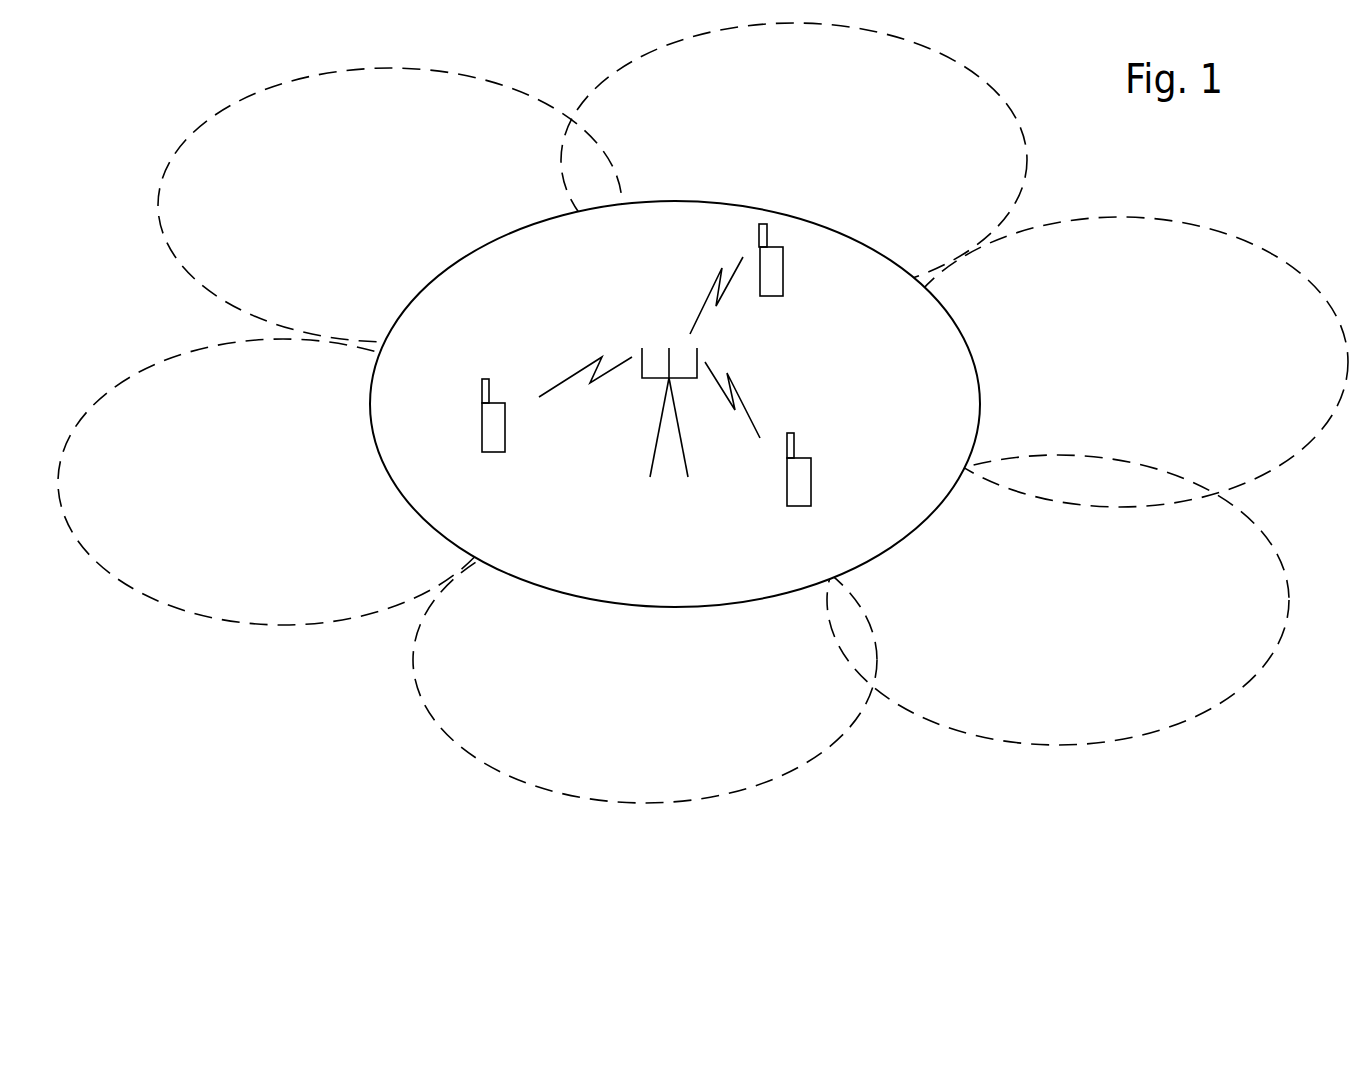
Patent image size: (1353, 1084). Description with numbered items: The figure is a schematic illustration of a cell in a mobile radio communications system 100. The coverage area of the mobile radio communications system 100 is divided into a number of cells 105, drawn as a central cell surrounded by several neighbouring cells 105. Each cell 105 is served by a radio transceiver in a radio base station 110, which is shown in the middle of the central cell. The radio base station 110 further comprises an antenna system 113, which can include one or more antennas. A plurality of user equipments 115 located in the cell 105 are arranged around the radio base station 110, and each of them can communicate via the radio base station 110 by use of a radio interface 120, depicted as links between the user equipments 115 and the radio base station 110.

The mobile radio communications system 100 is at (695, 666).
The cell 105 is at (703, 413).
The radio base station 110 is at (644, 427).
The antenna system 113 is at (668, 360).
The user equipment 115 is at (782, 302).
The radio interface 120 is at (710, 282).